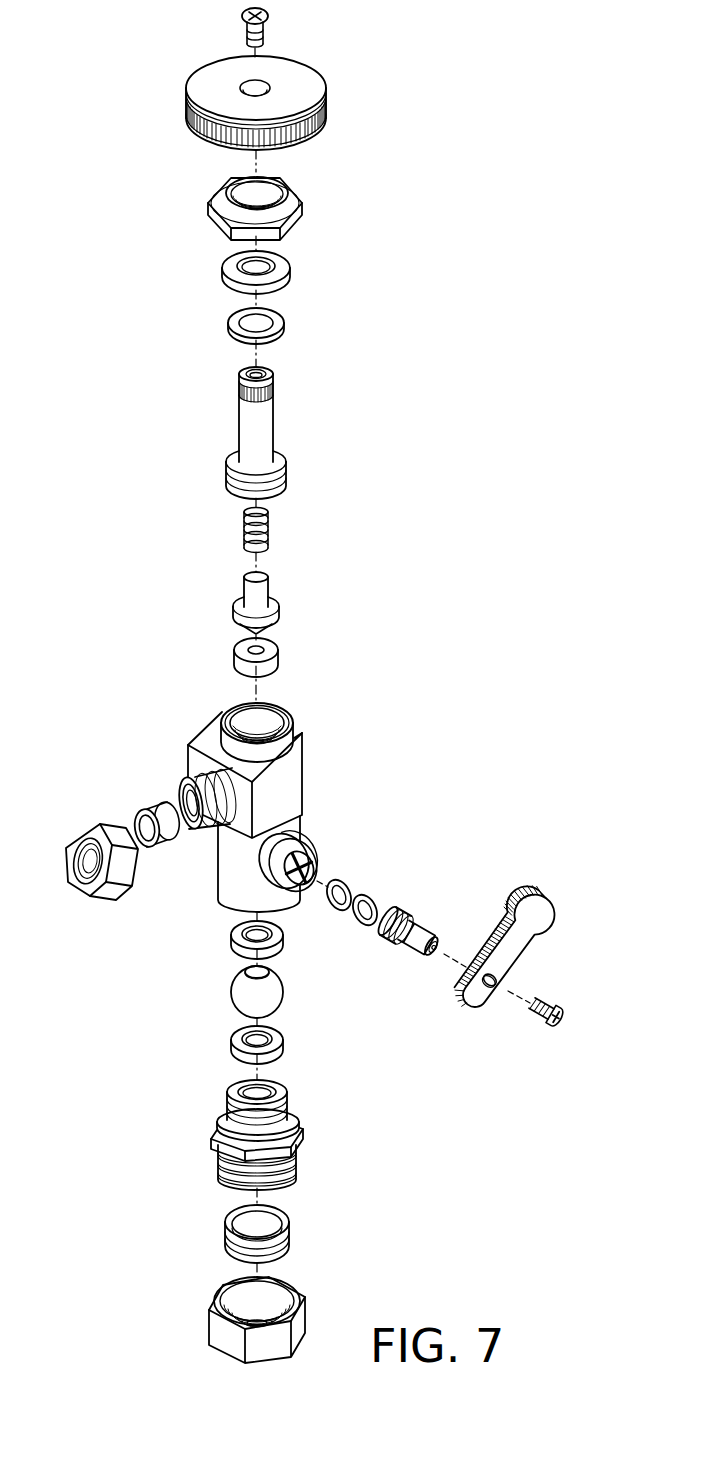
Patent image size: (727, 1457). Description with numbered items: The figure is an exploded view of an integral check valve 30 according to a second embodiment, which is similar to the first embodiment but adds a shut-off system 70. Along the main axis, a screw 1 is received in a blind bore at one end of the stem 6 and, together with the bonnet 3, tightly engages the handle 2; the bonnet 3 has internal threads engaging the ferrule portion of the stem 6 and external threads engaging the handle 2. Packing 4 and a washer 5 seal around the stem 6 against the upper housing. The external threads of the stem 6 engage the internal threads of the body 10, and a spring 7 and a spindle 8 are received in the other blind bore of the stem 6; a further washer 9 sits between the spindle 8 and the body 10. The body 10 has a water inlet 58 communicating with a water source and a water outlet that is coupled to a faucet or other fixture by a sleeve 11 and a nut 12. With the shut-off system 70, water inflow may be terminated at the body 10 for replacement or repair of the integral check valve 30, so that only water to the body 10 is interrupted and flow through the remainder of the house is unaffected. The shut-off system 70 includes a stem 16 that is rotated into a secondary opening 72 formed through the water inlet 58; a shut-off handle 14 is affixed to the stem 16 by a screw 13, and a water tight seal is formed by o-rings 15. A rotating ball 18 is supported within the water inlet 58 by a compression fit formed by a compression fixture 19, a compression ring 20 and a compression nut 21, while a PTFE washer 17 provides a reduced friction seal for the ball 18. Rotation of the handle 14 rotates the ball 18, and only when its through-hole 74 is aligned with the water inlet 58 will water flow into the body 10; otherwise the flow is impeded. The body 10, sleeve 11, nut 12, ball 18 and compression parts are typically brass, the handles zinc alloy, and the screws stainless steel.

The screw 1 is at (270, 13).
The handle 2 is at (326, 92).
The bonnet 3 is at (290, 190).
The packing 4 is at (290, 269).
The washer 5 is at (287, 323).
The stem 6 is at (310, 388).
The spring 7 is at (272, 538).
The spindle 8 is at (283, 606).
The seal washer 9 is at (280, 655).
The body 10 is at (289, 807).
The sleeve 11 is at (153, 806).
The nut 12 is at (78, 830).
The screw 13 is at (565, 1011).
The shut-off handle 14 is at (533, 917).
The o-rings 15 is at (360, 928).
The stem 16 is at (417, 953).
The washer 17 is at (232, 940).
The rotating ball 18 is at (230, 967).
The compression fixture 19 is at (212, 1120).
The compression ring 20 is at (226, 1228).
The compression nut 21 is at (208, 1318).
The integral check valve 30 is at (355, 415).
The water inlet 58 is at (237, 863).
The shut-off system 70 is at (477, 915).
The secondary opening 72 is at (313, 862).
The through-hole 74 is at (269, 972).